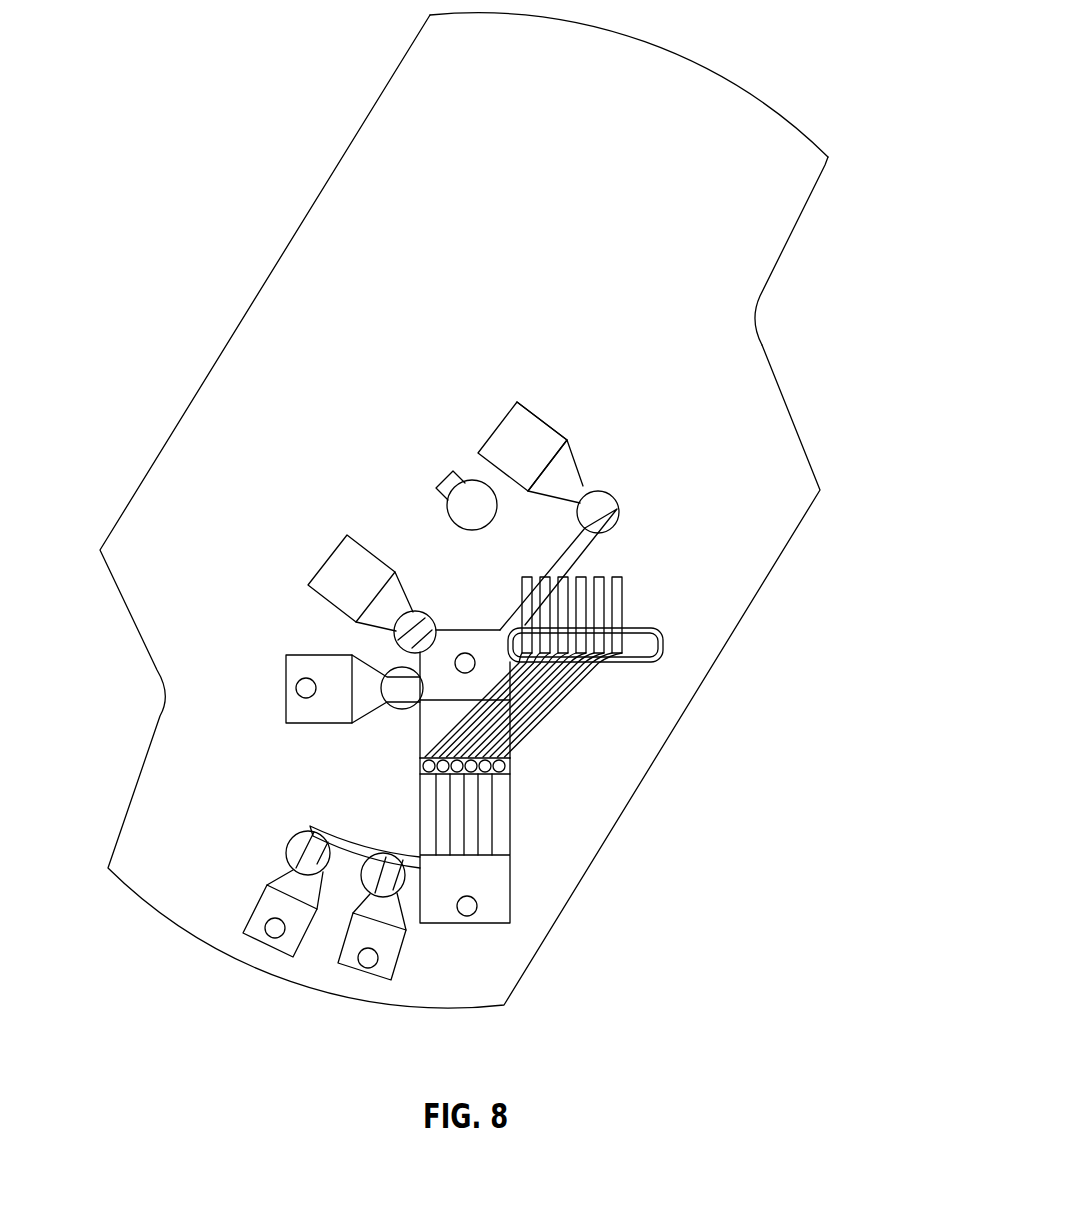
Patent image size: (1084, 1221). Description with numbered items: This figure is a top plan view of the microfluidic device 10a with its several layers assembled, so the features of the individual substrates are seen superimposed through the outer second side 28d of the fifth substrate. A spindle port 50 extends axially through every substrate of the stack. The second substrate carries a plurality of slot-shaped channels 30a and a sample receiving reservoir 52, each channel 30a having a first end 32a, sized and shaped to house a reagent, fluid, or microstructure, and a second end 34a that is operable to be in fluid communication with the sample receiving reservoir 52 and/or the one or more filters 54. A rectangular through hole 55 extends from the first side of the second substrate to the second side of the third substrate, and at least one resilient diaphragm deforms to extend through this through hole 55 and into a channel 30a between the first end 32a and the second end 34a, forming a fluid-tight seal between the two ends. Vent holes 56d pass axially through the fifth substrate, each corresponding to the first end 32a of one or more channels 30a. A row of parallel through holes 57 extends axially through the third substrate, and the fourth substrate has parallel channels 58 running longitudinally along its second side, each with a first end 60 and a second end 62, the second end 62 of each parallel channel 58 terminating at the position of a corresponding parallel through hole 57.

The microfluidic device 10a is at (291, 42).
The second side of the fifth substrate 28d is at (812, 166).
The channels 30a is at (567, 442).
The first end of the channel 32a is at (497, 427).
The second end of the channel 34a is at (585, 485).
The spindle port 50 is at (437, 480).
The sample receiving reservoir 52 is at (470, 641).
The filters 54 is at (512, 808).
The rectangular through hole 55 is at (663, 647).
The vent holes 56d is at (273, 927).
The parallel through holes 57 is at (422, 768).
The parallel channels 58 is at (592, 686).
The first end of the parallel channel 60 is at (613, 590).
The second end of the parallel channel 62 is at (535, 733).